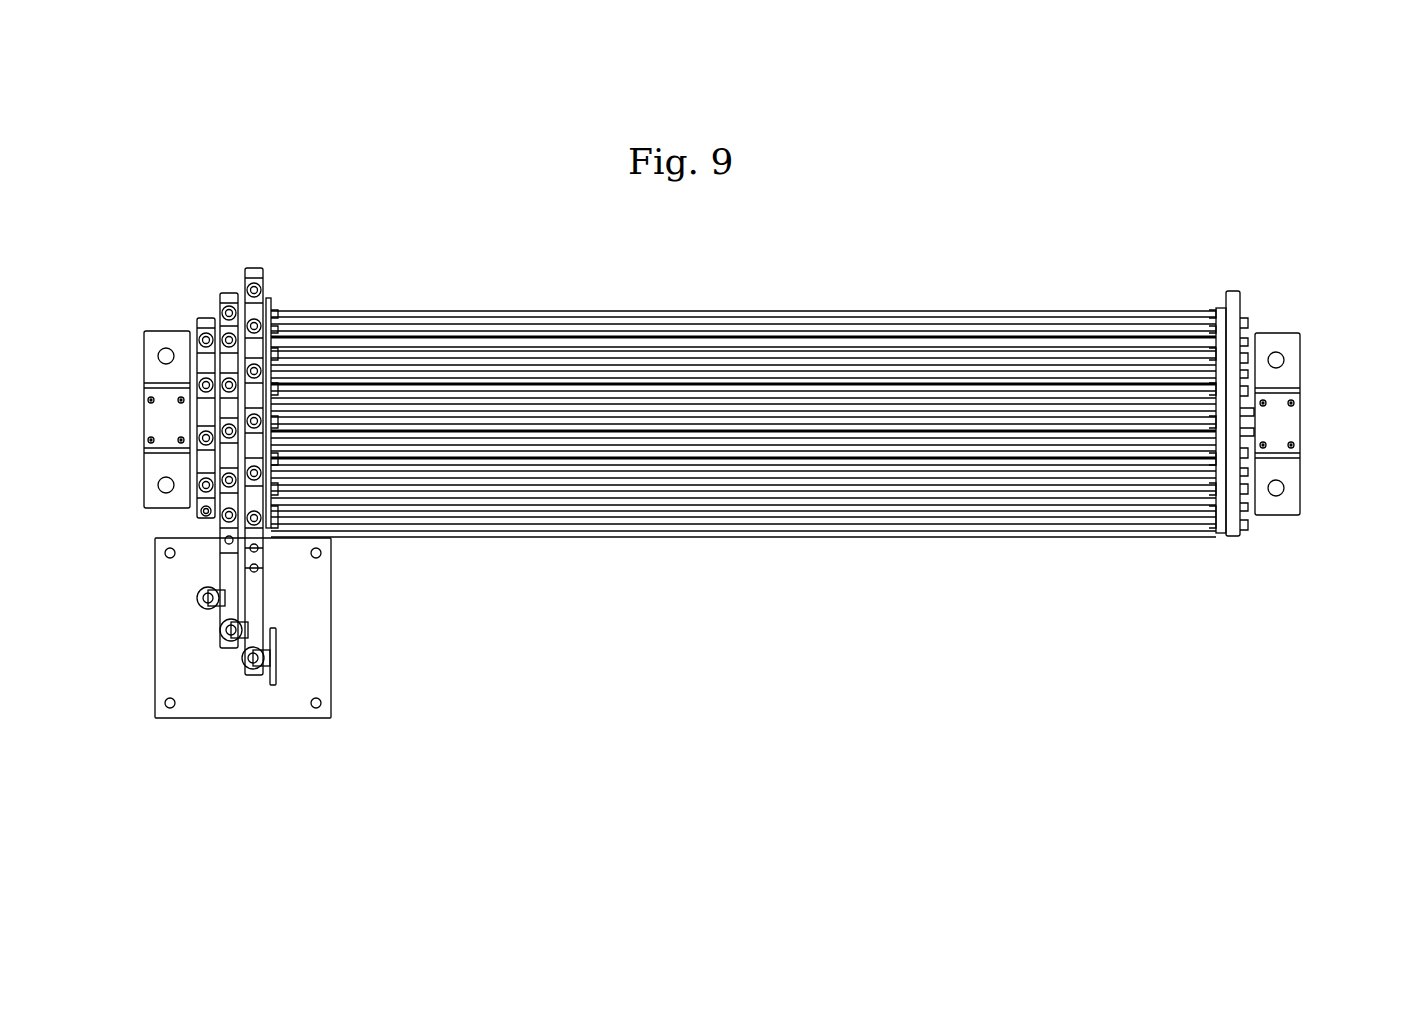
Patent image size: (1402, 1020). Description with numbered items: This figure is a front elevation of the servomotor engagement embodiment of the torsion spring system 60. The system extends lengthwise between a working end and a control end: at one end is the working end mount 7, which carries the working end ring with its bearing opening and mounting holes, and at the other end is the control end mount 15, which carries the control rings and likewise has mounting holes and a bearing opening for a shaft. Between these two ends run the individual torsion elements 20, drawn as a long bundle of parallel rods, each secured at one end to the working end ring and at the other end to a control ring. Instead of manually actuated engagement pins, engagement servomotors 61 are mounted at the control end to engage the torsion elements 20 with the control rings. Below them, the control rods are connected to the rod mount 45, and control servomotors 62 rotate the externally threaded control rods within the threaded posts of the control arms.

The working end mount 7 is at (1287, 365).
The control end mount 15 is at (140, 332).
The outer torsion elements 20 is at (445, 305).
The rod mount 45 is at (312, 625).
The torsion spring system 60 is at (862, 265).
The engagement servomotors 61 is at (213, 290).
The control servomotors 62 is at (190, 596).